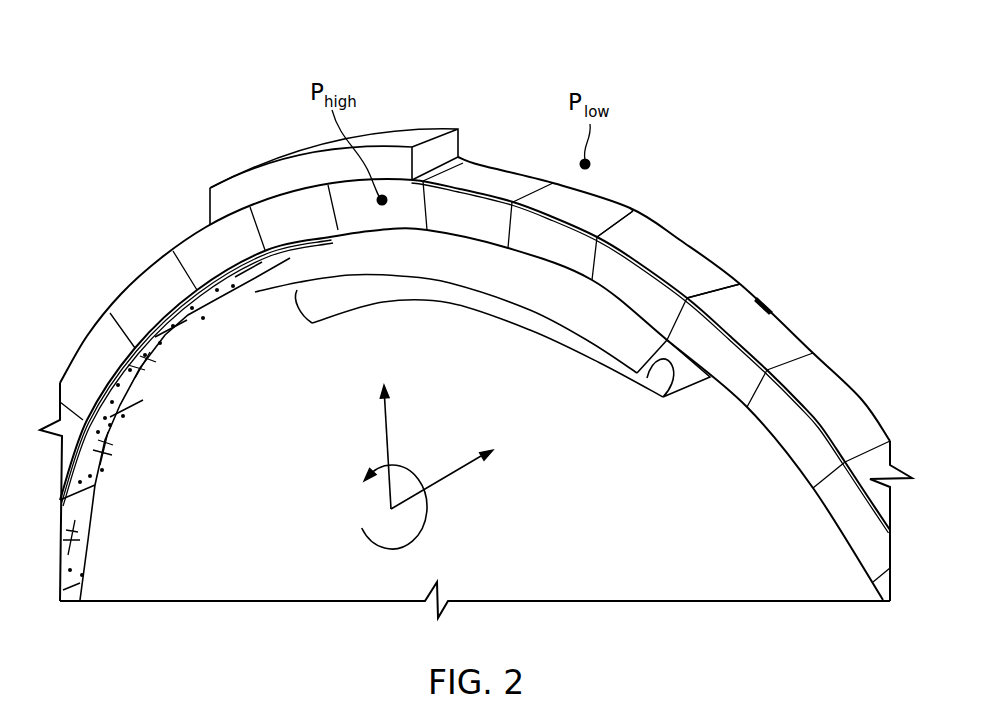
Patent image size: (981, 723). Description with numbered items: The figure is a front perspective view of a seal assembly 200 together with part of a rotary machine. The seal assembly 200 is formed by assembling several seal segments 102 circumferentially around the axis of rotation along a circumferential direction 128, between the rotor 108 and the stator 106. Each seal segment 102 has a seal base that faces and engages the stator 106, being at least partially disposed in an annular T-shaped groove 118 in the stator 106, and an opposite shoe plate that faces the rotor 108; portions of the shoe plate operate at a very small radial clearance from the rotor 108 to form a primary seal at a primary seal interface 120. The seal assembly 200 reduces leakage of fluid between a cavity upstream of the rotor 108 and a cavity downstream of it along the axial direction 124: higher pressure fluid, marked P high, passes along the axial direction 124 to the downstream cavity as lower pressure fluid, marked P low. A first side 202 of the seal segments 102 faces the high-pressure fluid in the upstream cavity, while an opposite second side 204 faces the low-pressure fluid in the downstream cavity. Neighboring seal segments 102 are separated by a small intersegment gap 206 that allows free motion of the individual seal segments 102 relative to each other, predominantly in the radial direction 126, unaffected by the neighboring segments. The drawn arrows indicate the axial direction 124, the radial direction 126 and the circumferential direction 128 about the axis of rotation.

The seal assembly 200 is at (516, 46).
The seal segment 102 is at (509, 164).
The stator 106 is at (245, 145).
The rotor 108 is at (338, 304).
The T-shaped groove 118 is at (592, 213).
The primary seal interface 120 is at (205, 320).
The axial direction 124 is at (448, 482).
The radial direction 126 is at (389, 428).
The circumferential direction 128 is at (358, 530).
The first side 202 is at (143, 293).
The second side 204 is at (814, 330).
The intersegment gap 206 is at (636, 227).